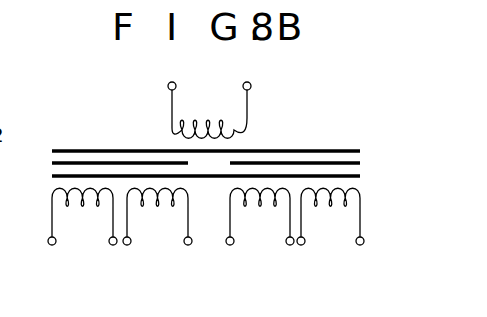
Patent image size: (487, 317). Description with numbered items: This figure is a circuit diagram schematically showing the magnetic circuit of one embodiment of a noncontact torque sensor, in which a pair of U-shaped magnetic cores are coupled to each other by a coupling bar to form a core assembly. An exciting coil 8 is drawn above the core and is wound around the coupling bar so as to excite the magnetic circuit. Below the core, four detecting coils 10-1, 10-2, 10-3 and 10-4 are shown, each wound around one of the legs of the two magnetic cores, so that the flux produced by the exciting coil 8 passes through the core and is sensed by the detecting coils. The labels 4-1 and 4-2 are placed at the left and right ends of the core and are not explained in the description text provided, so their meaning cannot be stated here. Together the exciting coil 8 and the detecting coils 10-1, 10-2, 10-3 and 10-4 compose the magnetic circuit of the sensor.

The exciting coil 8 is at (247, 118).
The core half 4-1 is at (48, 172).
The core half 4-2 is at (358, 170).
The detecting coil 10-1 is at (52, 222).
The detecting coil 10-2 is at (188, 222).
The detecting coil 10-3 is at (230, 222).
The detecting coil 10-4 is at (360, 222).